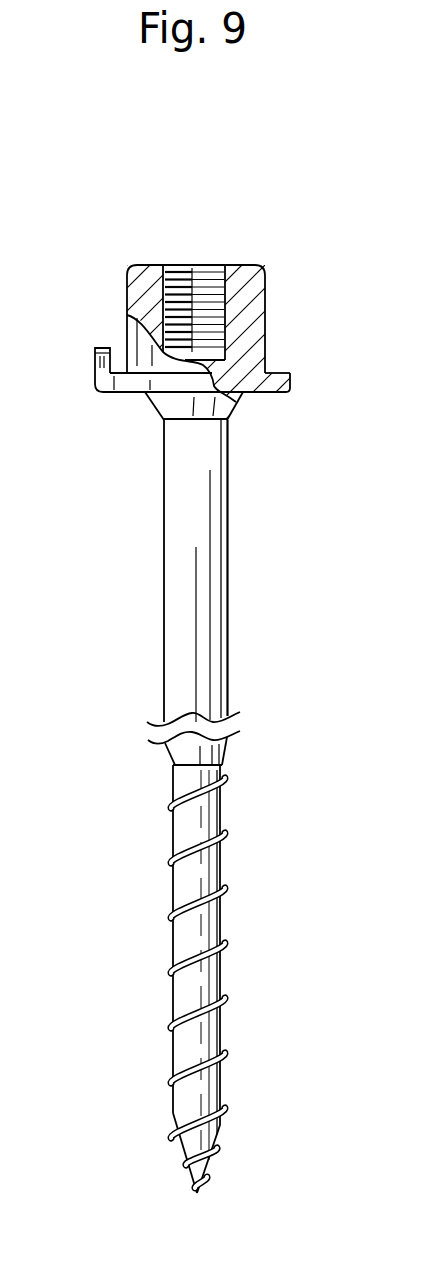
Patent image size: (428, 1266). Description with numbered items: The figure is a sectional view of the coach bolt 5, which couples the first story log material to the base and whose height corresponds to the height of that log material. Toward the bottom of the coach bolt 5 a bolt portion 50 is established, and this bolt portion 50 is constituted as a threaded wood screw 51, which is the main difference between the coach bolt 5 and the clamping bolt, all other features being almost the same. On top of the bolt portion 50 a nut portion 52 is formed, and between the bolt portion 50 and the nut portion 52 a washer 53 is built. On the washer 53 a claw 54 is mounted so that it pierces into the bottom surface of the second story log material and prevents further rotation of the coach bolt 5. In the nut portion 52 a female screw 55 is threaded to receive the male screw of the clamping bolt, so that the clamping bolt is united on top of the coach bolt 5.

The coach bolt 5 is at (253, 513).
The bolt portion 50 is at (185, 594).
The wood screw 51 is at (222, 891).
The nut portion 52 is at (253, 312).
The washer 53 is at (277, 384).
The claw 54 is at (95, 363).
The female screw 55 is at (208, 287).